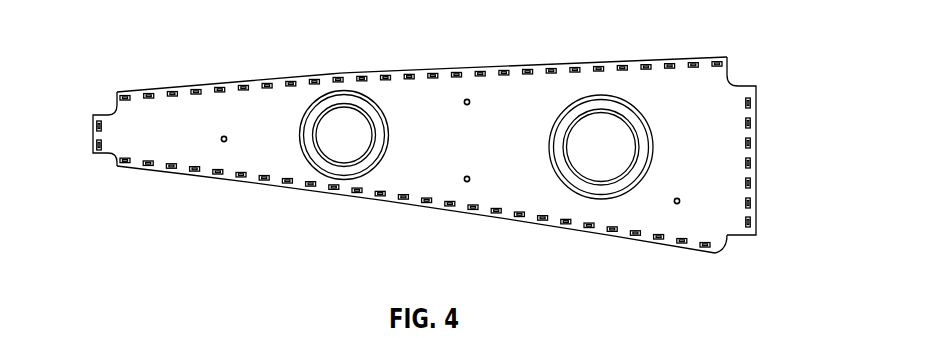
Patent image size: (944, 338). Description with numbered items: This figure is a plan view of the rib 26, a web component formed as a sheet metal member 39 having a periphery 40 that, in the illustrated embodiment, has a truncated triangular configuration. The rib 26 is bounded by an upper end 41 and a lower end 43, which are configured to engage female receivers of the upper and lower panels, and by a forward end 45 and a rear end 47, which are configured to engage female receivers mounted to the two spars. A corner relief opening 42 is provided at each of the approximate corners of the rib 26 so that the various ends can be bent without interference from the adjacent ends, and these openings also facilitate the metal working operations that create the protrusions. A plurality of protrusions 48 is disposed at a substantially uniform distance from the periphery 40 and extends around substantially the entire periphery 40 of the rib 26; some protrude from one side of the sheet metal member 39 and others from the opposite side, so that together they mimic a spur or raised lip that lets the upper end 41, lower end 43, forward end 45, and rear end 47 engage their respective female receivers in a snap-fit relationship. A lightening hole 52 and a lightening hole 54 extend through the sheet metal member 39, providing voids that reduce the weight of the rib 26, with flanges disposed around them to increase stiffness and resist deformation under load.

The rib 26 is at (556, 88).
The sheet metal member 39 is at (639, 207).
The periphery 40 is at (682, 57).
The upper end 41 is at (375, 73).
The corner relief opening 42 is at (104, 102).
The lower end 43 is at (347, 193).
The forward end 45 is at (93, 138).
The rear end 47 is at (753, 192).
The plurality of protrusions 48 is at (243, 84).
The lightening hole 52 is at (360, 143).
The lightening hole 54 is at (628, 153).